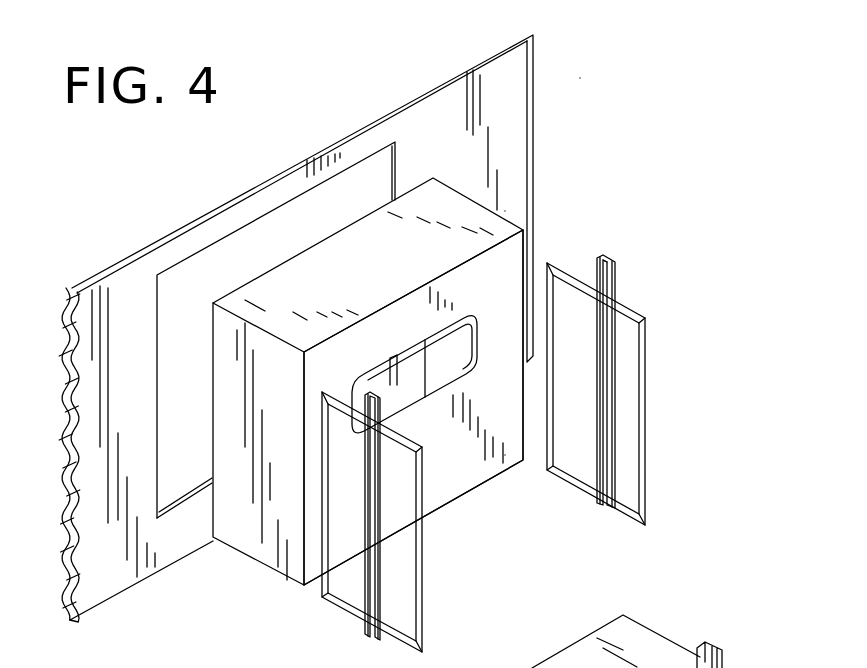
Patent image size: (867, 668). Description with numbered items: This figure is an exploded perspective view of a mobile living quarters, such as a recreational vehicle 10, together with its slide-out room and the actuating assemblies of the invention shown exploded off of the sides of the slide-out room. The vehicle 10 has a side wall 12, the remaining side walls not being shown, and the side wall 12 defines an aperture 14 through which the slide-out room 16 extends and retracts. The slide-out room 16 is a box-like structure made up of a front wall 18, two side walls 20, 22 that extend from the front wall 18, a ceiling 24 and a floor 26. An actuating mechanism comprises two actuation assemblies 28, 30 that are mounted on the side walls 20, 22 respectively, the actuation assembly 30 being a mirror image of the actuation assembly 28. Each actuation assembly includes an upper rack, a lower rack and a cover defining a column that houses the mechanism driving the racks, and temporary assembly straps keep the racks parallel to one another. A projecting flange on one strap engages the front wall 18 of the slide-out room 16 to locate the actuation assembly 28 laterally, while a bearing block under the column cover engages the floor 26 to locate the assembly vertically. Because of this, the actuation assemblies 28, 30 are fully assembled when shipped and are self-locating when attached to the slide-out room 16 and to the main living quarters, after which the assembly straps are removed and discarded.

The recreational vehicle 10 is at (577, 79).
The side wall 12 is at (512, 146).
The aperture 14 is at (375, 182).
The slide-out room 16 is at (503, 213).
The front wall 18 is at (507, 457).
The side wall 20 is at (248, 535).
The side wall 22 is at (538, 252).
The ceiling 24 is at (385, 278).
The floor 26 is at (460, 500).
The actuation assembly 28 is at (433, 627).
The actuation assembly 30 is at (665, 412).